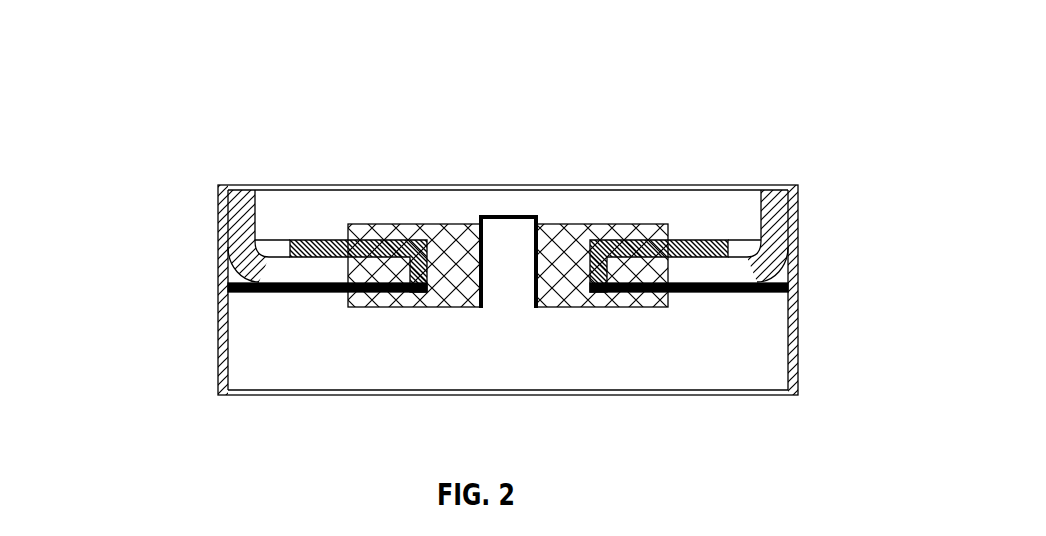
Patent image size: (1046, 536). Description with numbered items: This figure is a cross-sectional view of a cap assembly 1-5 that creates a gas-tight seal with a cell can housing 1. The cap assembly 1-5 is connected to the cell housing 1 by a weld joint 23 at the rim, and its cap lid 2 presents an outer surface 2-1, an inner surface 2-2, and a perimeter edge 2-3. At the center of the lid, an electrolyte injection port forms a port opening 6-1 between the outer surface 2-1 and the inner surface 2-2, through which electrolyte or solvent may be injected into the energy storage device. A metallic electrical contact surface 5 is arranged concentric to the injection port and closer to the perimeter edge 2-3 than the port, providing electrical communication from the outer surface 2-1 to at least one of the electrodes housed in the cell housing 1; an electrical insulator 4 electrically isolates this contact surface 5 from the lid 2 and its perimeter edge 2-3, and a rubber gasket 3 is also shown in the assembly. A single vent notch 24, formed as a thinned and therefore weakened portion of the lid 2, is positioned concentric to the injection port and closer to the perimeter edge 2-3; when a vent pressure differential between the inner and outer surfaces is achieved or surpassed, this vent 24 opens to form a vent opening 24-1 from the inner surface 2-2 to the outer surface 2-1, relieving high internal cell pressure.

The cell can housing 1 is at (798, 320).
The cap assembly 1-5 is at (288, 53).
The cap lid 2 is at (775, 232).
The outer surface 2-1 is at (550, 147).
The inner surface 2-2 is at (717, 425).
The perimeter edge 2-3 is at (723, 145).
The weld joint 23 is at (788, 188).
The single vent notch 24 is at (682, 267).
The vent opening 24-1 is at (720, 353).
The rubber gasket 3 is at (322, 268).
The electrical insulator 4 is at (218, 285).
The metallic electrical contact surface 5 is at (497, 214).
The port opening 6-1 is at (438, 382).